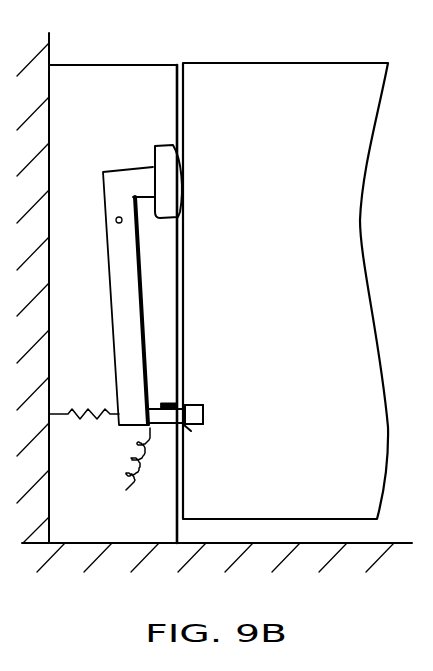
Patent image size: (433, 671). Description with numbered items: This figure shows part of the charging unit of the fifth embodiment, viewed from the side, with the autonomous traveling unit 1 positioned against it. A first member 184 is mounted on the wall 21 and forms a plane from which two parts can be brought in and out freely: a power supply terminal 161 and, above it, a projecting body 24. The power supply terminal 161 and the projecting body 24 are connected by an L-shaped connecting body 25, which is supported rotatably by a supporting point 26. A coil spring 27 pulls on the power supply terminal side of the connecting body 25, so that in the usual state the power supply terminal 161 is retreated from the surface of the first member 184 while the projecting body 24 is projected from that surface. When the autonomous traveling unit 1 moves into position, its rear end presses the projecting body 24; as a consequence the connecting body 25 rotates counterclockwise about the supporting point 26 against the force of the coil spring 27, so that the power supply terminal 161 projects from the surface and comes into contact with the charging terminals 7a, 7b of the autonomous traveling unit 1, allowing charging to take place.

The autonomous traveling unit 1 is at (343, 292).
The wall 21 is at (27, 48).
The first member 184 is at (152, 64).
The projecting body 24 is at (172, 178).
The connecting body 25 is at (128, 315).
The supporting point 26 is at (117, 217).
The coil spring 27 is at (81, 412).
The charging terminal 7a is at (203, 410).
The charging terminal 7b is at (194, 414).
The power supply terminal 161 is at (186, 428).